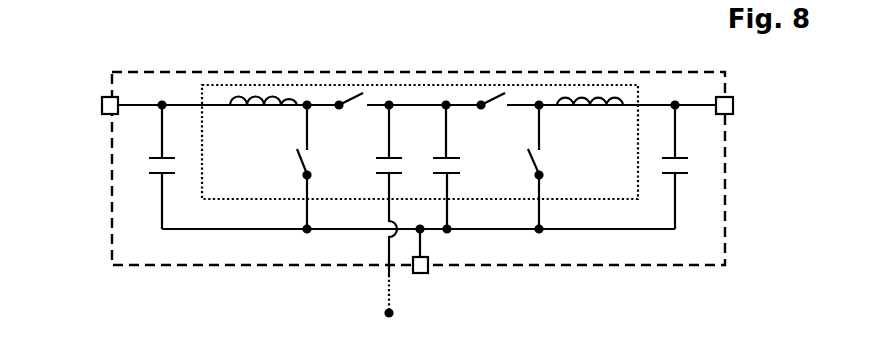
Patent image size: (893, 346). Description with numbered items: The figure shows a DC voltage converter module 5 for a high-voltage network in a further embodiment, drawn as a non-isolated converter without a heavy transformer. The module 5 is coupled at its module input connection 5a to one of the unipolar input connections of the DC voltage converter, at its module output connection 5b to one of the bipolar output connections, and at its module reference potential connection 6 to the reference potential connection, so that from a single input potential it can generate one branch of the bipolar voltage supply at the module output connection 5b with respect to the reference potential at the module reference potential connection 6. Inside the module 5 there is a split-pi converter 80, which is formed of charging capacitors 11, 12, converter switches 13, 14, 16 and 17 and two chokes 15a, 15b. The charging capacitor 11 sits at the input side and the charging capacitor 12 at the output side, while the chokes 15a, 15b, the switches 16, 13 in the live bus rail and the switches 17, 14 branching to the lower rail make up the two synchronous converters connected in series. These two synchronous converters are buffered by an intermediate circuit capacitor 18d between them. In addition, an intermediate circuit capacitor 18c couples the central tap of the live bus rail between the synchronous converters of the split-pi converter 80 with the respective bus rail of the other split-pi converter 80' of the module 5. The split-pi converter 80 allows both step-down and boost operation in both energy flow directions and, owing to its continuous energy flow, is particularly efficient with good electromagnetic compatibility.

The DC voltage converter module 5 is at (725, 210).
The module input connection 5a is at (102, 105).
The module output connection 5b is at (733, 105).
The module reference potential connection 6 is at (428, 270).
The charging capacitor 11 is at (173, 156).
The charging capacitor 12 is at (686, 156).
The converter switch 13 is at (496, 103).
The converter switch 14 is at (543, 160).
The choke 15a is at (255, 107).
The choke 15b is at (585, 107).
The converter switch 16 is at (355, 103).
The converter switch 17 is at (311, 160).
The intermediate circuit capacitor 18c is at (400, 156).
The intermediate circuit capacitor 18d is at (460, 170).
The split-pi converter 80 is at (420, 174).
The other split-pi converter 80' is at (413, 305).